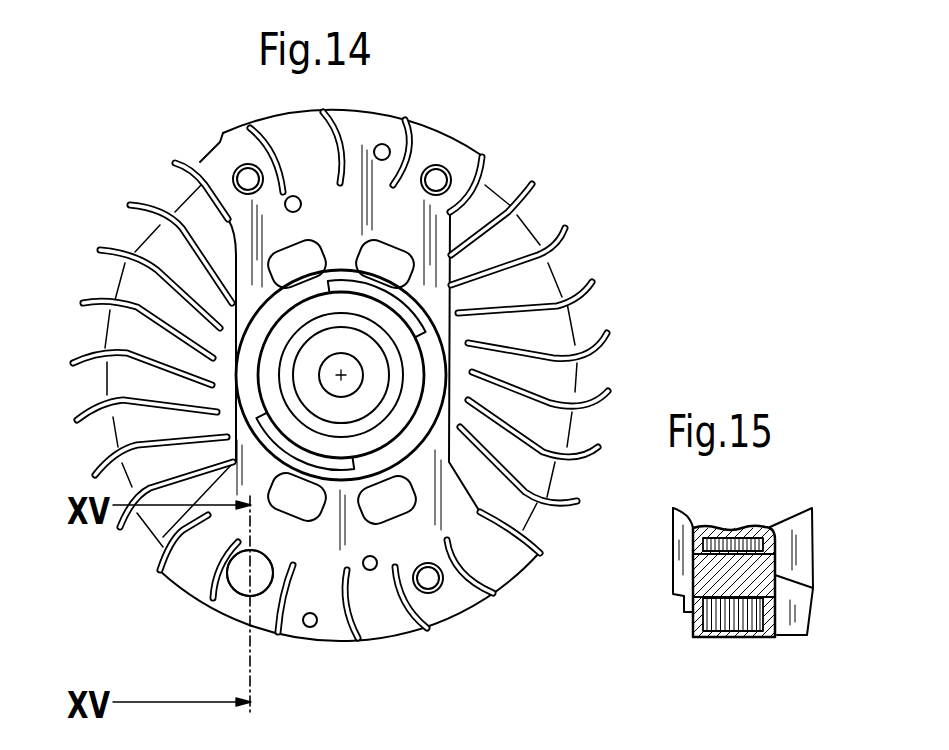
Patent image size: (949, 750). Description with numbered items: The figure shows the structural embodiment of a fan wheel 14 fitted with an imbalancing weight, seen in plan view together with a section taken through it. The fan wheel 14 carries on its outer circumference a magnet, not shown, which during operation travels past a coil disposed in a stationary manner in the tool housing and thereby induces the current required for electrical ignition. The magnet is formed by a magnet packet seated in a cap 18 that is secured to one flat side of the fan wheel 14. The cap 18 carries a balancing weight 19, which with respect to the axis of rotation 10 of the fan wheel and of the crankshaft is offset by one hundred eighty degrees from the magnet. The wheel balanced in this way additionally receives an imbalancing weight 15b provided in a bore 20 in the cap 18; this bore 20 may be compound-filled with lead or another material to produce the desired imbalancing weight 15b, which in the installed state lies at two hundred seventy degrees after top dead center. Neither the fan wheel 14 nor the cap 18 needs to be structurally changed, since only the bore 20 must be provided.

In FIG. 14, the fan wheel 14 is at (586, 260).
In FIG. 14, the cap 18 is at (400, 212).
In FIG. 14, the axis of rotation 10 is at (343, 376).
In FIG. 14, the bore 20 is at (228, 578).
In FIG. 15, the bore 20 is at (776, 548).
In FIG. 14, the imbalancing weight 15b is at (260, 583).
In FIG. 15, the imbalancing weight 15b is at (739, 591).
In FIG. 15, the balancing weight 19 is at (730, 620).